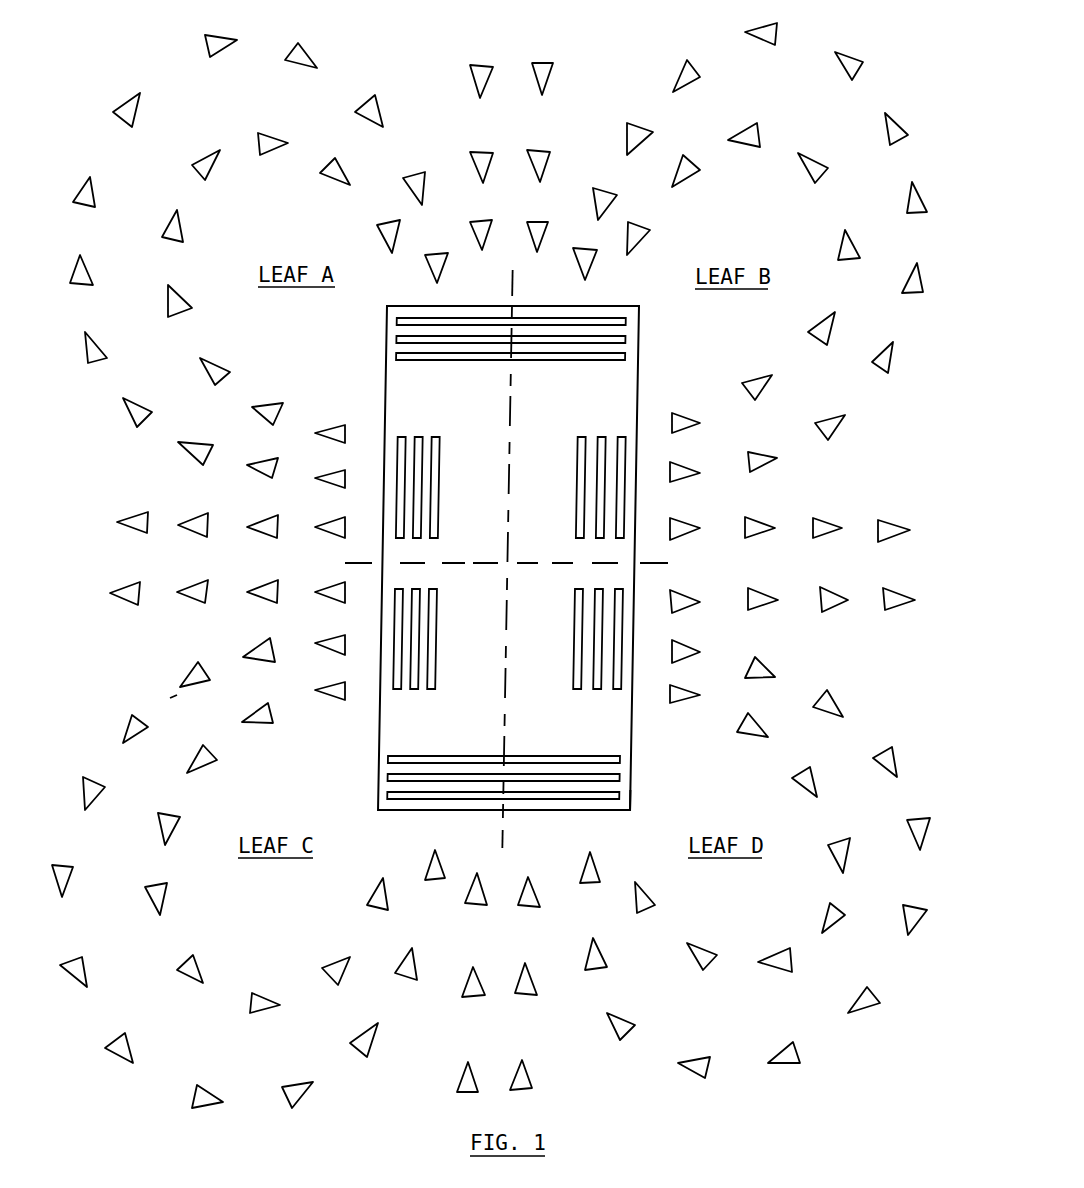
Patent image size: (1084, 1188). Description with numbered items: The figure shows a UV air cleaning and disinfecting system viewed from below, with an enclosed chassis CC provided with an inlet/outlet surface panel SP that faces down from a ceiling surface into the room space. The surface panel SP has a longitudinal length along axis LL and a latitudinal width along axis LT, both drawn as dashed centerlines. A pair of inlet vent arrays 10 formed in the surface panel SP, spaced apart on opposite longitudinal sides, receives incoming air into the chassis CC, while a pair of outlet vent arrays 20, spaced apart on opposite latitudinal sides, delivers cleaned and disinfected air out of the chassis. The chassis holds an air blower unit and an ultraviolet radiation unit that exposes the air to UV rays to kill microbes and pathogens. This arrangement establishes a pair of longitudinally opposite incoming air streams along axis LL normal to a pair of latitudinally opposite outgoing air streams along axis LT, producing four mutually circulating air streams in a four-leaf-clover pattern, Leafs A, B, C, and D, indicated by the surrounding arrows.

The inlet vent arrays 10 is at (397, 340).
The outlet vent arrays 20 is at (402, 457).
The inlet/outlet surface panel SP is at (543, 734).
The longitudinal axis LL is at (503, 560).
The latitudinal axis LT is at (503, 562).
The enclosed chassis CC is at (597, 824).